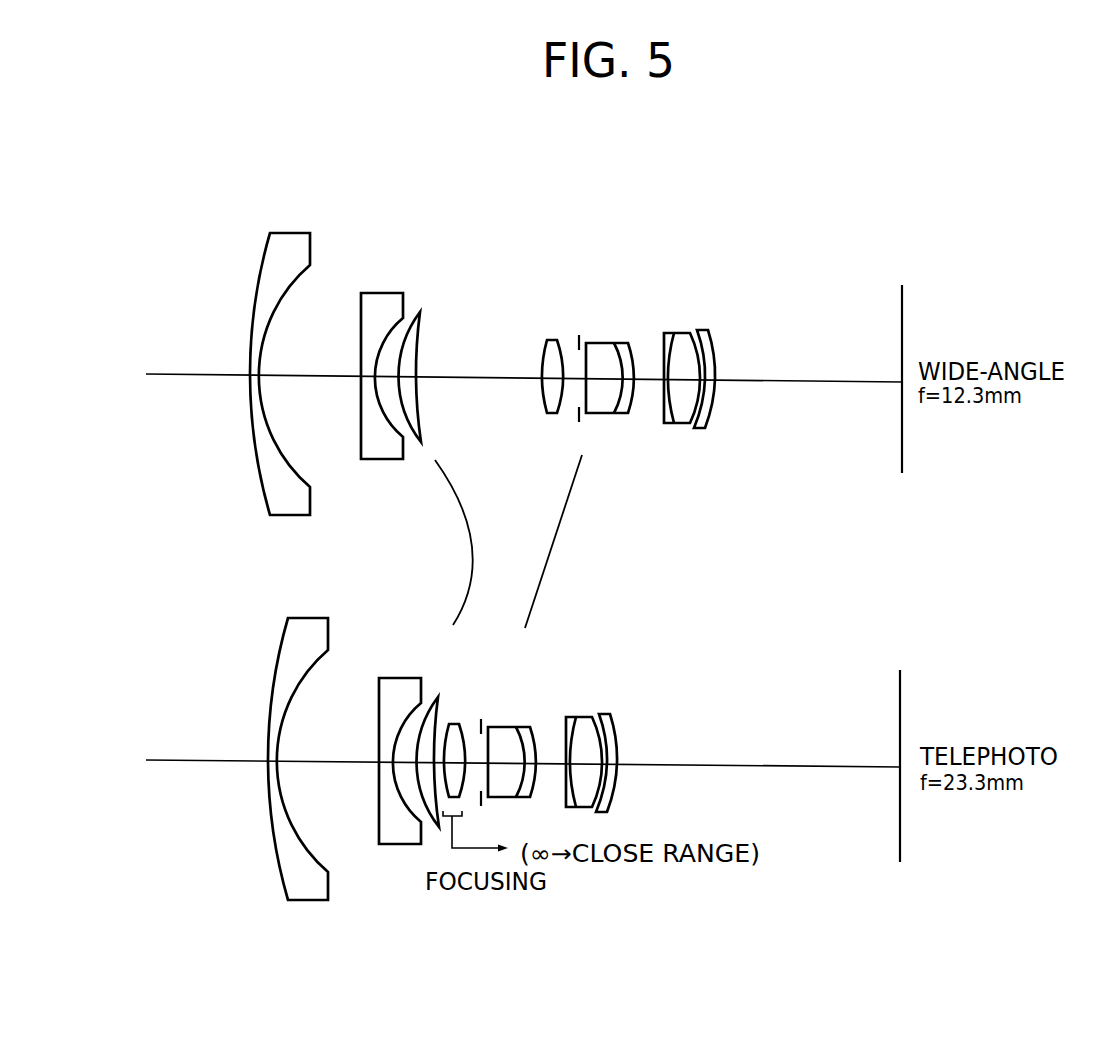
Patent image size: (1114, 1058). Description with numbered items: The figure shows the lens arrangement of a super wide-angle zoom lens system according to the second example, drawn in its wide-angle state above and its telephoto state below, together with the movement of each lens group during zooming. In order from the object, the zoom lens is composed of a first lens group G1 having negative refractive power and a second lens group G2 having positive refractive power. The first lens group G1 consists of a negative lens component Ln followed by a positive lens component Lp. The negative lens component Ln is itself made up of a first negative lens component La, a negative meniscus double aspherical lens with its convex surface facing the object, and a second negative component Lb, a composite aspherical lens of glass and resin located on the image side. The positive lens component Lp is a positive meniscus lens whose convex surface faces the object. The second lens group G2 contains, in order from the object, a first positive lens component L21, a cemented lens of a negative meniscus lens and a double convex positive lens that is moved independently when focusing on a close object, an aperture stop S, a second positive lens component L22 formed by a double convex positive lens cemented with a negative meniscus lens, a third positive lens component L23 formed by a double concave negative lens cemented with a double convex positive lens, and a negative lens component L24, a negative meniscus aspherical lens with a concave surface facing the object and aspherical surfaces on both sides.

The first lens group G1 is at (443, 145).
The negative lens component Ln is at (400, 185).
The positive lens component Lp is at (444, 185).
The first negative lens component La is at (318, 233).
The second negative component Lb is at (400, 233).
The second lens group G2 is at (723, 233).
The aperture stop S is at (572, 336).
The first positive lens component L21 is at (562, 322).
The second positive lens component L22 is at (630, 322).
The third positive lens component L23 is at (686, 322).
The negative lens component L24 is at (713, 322).